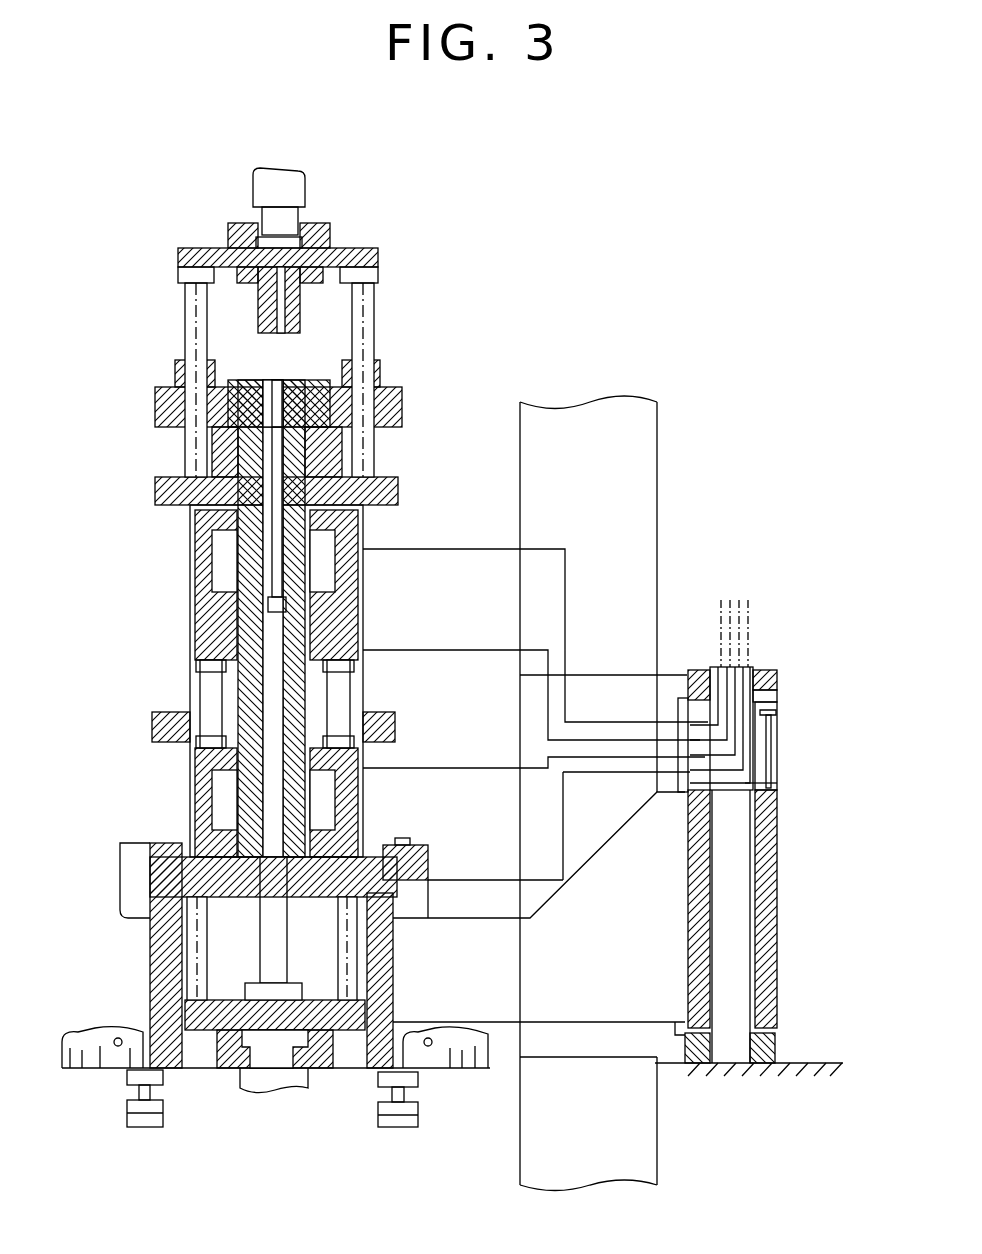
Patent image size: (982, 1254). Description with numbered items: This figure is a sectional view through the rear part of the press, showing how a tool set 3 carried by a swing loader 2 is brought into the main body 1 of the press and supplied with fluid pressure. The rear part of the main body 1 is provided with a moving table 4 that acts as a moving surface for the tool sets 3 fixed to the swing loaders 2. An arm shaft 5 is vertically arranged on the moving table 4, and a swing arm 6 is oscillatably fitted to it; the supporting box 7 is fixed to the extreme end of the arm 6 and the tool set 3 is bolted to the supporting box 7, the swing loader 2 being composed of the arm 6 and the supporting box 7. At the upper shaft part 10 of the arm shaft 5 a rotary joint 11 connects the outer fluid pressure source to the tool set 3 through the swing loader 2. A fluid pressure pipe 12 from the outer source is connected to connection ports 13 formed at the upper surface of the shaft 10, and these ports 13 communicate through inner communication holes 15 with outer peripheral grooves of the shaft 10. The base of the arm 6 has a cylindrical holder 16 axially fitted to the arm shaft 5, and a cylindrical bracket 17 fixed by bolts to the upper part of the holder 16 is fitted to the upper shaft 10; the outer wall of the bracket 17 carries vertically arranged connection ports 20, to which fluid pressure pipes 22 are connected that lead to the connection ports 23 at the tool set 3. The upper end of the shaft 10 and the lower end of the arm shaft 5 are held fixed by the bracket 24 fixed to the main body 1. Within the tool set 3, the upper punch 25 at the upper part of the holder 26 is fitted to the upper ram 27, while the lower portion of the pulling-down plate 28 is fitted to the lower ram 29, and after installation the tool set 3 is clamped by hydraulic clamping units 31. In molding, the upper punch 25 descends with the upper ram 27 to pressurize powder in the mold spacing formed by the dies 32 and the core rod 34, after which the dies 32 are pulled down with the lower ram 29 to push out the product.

The main body of the press 1 is at (665, 505).
The swing loader 2 is at (148, 948).
The tool set 3 is at (188, 640).
The moving table 4 is at (814, 1063).
The arm shaft 5 is at (730, 880).
The swing arm 6 is at (658, 968).
The supporting box 7 is at (160, 990).
The upper shaft part 10 is at (775, 790).
The rotary joint 11 is at (780, 745).
The fluid pressure pipe 12 is at (726, 600).
The connection port 13 is at (712, 642).
The inner communication hole 15 is at (778, 697).
The cylindrical holder 16 is at (770, 845).
The cylindrical bracket 17 is at (778, 770).
The connection port 20 is at (688, 720).
The fluid pressure pipe 22 is at (565, 655).
The connection port 23 is at (363, 545).
The bracket 24 is at (778, 682).
The upper punch 25 is at (303, 298).
The holder 26 is at (370, 259).
The upper ram 27 is at (293, 200).
The pulling-down plate 28 is at (232, 1050).
The lower ram 29 is at (290, 1075).
The hydraulic clamping unit 31 is at (105, 1035).
The die 32 is at (262, 386).
The core rod 34 is at (270, 528).